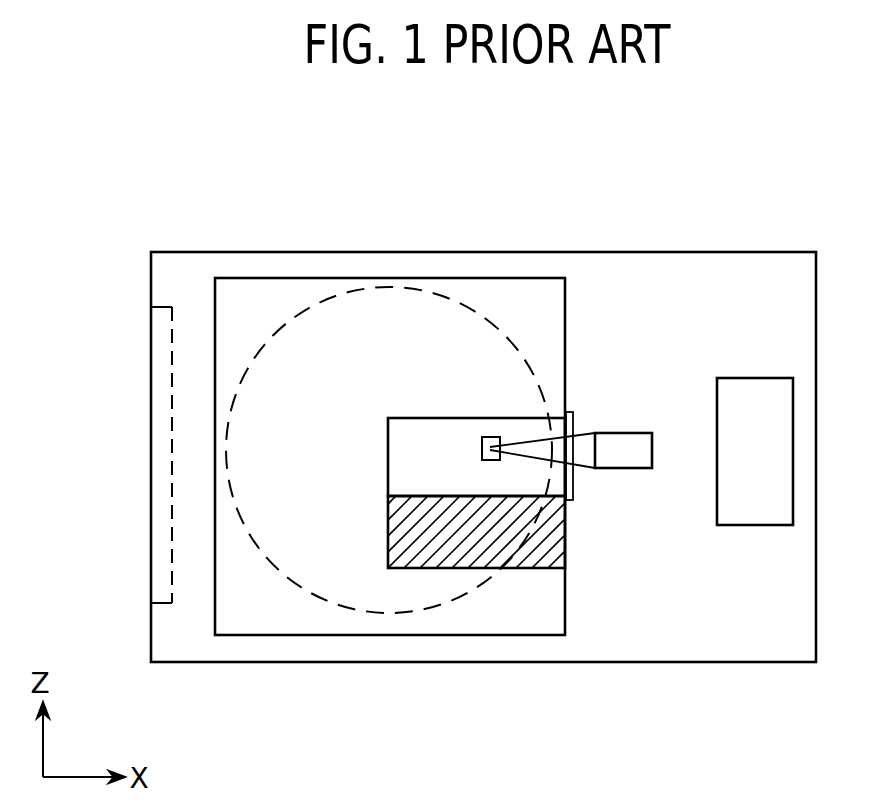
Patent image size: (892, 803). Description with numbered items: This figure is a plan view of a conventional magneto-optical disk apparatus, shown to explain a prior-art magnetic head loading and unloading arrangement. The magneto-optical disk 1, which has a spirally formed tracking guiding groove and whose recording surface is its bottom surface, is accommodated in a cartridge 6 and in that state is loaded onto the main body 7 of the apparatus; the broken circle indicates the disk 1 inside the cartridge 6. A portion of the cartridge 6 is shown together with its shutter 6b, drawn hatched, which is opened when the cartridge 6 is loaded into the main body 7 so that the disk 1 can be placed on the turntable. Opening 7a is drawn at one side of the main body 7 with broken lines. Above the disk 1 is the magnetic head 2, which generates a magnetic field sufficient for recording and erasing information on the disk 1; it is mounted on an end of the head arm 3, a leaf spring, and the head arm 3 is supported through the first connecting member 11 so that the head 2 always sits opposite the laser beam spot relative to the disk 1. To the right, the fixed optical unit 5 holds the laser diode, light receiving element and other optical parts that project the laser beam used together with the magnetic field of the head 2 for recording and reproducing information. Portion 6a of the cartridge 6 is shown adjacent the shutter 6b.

The magneto-optical disk 1 is at (298, 310).
The magnetic head 2 is at (488, 437).
The head arm 3 is at (573, 500).
The fixed optical unit 5 is at (751, 395).
The cartridge 6 is at (397, 635).
The upper portion of base 6a is at (435, 440).
The shutter 6b is at (400, 525).
The main body 7 is at (519, 252).
The insertion slot 7a is at (150, 585).
The first connecting member 11 is at (632, 452).